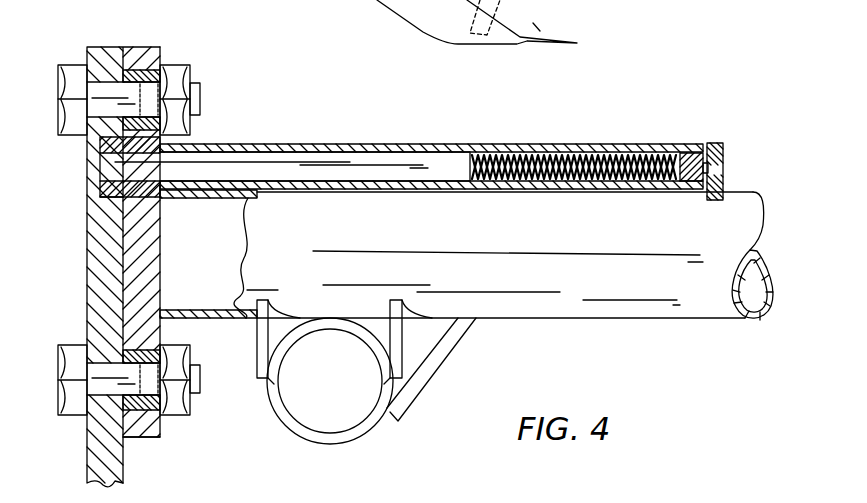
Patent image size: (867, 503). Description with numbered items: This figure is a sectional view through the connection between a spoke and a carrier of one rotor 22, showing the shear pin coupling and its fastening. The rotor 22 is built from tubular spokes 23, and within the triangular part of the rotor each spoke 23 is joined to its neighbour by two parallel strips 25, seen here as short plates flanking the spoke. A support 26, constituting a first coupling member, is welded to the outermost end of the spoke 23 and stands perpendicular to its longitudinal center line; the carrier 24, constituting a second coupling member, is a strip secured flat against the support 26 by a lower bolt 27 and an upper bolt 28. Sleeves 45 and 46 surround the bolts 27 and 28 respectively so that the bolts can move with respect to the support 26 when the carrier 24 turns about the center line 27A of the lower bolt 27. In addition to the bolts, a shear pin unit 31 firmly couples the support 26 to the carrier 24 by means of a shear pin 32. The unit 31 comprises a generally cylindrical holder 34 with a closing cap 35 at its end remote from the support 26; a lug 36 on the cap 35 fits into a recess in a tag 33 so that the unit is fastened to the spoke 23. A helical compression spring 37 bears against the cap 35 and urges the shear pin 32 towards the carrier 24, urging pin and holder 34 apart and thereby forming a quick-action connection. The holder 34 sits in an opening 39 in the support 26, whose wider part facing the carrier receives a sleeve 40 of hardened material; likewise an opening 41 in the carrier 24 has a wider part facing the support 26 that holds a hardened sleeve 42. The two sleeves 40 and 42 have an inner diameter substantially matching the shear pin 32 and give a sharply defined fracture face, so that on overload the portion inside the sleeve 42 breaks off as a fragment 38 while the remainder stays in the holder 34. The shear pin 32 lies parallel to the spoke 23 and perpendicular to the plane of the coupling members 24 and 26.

The rotor 22 is at (600, 318).
The tubular spoke 23 is at (412, 384).
The carrier 24 is at (126, 468).
The parallel strips 25 is at (280, 322).
The support 26 is at (147, 48).
The lower bolt 27 is at (66, 345).
The center line of the bolt 27A is at (200, 378).
The upper bolt 28 is at (68, 64).
The shear pin unit 31 is at (341, 144).
The shear pin 32 is at (402, 150).
The tag 33 is at (718, 150).
The holder 34 is at (262, 144).
The closing cap 35 is at (700, 152).
The lug 36 is at (709, 169).
The helical compression spring 37 is at (535, 156).
The shear pin fragment 38 is at (103, 177).
The opening 39 is at (157, 147).
The sleeve 40 is at (133, 191).
The opening 41 is at (92, 162).
The sleeve 42 is at (100, 197).
The sleeve 45 is at (143, 437).
The sleeve 46 is at (150, 72).